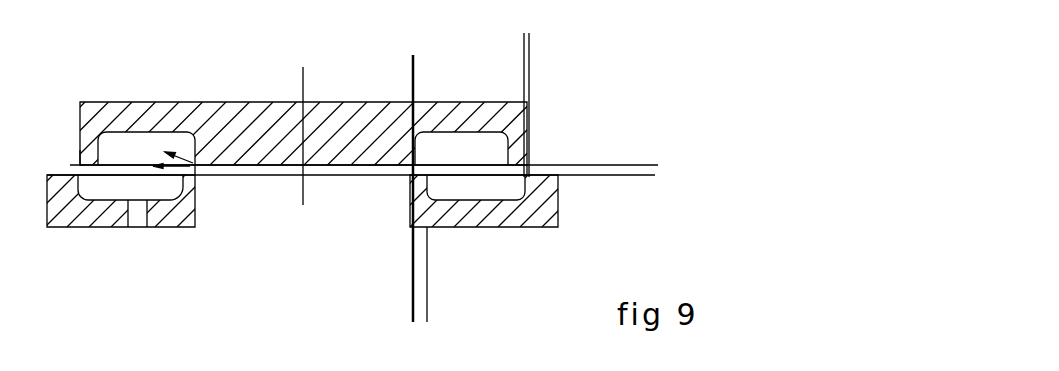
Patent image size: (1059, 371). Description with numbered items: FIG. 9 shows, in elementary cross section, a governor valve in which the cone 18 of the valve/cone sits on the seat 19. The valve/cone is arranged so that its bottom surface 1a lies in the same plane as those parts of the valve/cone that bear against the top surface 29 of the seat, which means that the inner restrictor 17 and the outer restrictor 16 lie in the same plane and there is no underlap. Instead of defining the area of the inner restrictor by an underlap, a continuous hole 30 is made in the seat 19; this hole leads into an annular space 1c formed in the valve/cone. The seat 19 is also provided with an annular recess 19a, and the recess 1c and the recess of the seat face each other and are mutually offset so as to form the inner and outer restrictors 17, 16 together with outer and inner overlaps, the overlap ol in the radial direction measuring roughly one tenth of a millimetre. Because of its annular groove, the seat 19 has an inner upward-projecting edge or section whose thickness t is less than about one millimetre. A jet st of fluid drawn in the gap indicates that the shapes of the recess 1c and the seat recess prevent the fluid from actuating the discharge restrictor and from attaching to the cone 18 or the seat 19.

The outer restrictor 16 is at (70, 157).
The annular space 1c is at (148, 145).
The bottom surface of the valve/cone 1a is at (605, 279).
The cone 18 is at (540, 131).
The inner restrictor 17 is at (205, 178).
The continuous hole 30 is at (135, 232).
The jet of fluid st is at (167, 177).
The seat 19 is at (557, 212).
The top surface of the seat 19a is at (473, 190).
The top surface of the seat 29 is at (605, 279).
The outer overlap ol is at (465, 42).
The thickness t is at (353, 314).